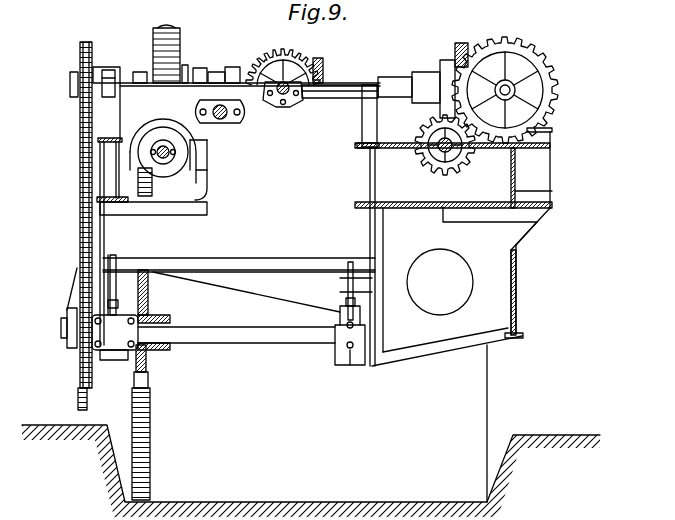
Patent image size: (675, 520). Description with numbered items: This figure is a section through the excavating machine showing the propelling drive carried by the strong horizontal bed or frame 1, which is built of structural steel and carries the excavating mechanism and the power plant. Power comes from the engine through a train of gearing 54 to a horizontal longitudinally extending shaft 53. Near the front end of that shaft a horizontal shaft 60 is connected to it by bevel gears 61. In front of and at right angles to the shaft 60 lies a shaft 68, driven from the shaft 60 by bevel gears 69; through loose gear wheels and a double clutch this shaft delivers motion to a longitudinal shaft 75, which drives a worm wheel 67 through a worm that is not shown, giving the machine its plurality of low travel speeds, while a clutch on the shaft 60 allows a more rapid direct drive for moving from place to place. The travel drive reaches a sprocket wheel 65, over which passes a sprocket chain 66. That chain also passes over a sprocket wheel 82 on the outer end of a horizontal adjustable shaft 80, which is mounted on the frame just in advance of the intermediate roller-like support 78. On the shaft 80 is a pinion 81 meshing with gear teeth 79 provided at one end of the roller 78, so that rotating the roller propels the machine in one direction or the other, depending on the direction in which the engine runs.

The bed or frame 1 is at (552, 191).
The horizontal longitudinally extending shaft 53 is at (540, 64).
The train of gearing 54 is at (459, 117).
The horizontal shaft 60 is at (394, 85).
The bevel gears 61 is at (462, 43).
The sprocket wheel 65 is at (79, 62).
The sprocket chain 66 is at (79, 185).
The worm wheel 67 is at (179, 35).
The shaft 68 is at (292, 102).
The bevel gears 69 is at (290, 56).
The longitudinal shaft 75 is at (162, 148).
The intermediate roller-like support 78 is at (401, 415).
The gear teeth 79 is at (134, 399).
The horizontal adjustable shaft 80 is at (223, 344).
The pinion 81 is at (150, 379).
The sprocket wheel 82 is at (78, 364).